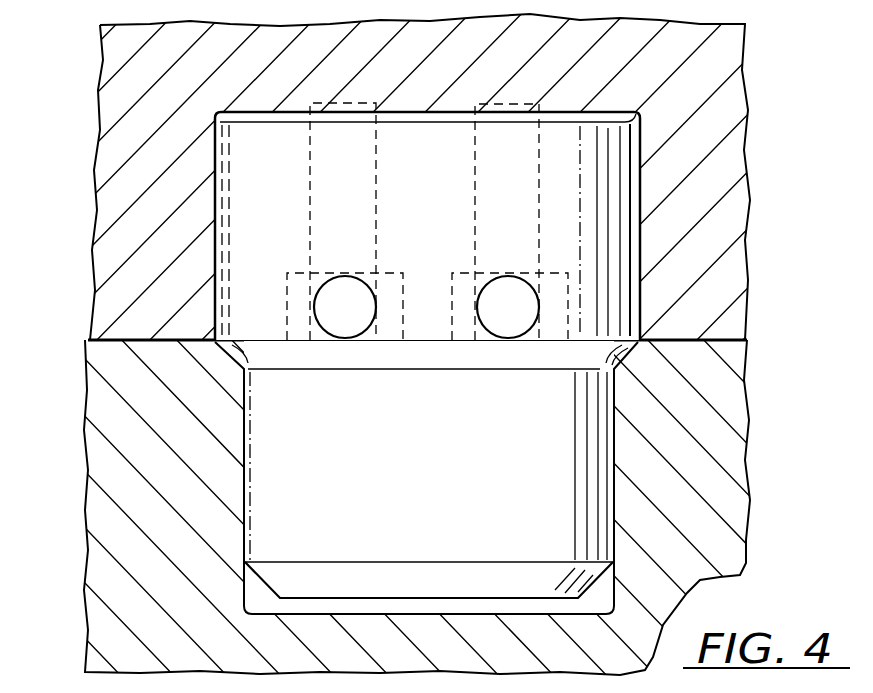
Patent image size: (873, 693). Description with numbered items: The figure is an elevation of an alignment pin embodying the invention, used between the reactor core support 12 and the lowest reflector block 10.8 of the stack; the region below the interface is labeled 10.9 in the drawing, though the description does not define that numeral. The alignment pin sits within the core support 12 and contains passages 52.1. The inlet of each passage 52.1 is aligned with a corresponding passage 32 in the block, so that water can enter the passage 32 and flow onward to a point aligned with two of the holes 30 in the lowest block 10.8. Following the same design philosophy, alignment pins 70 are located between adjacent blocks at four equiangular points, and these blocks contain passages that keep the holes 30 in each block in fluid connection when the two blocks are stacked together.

The block 10.8 is at (735, 224).
The lower housing block 10.9 is at (733, 469).
The core support 12 is at (684, 449).
The holes 30 is at (334, 85).
The passage 32 is at (299, 282).
The passages 52.1 is at (328, 302).
The alignment pins 70 is at (390, 453).